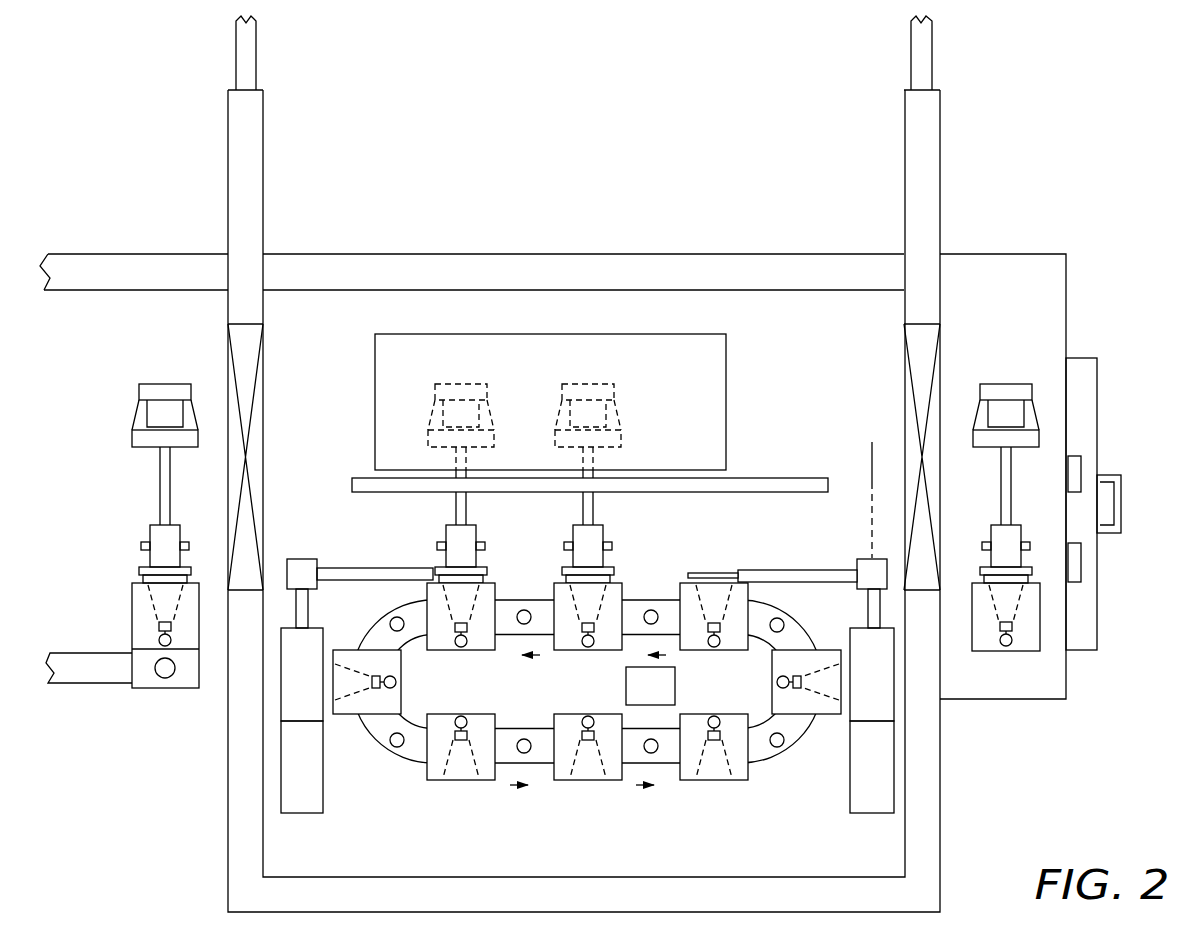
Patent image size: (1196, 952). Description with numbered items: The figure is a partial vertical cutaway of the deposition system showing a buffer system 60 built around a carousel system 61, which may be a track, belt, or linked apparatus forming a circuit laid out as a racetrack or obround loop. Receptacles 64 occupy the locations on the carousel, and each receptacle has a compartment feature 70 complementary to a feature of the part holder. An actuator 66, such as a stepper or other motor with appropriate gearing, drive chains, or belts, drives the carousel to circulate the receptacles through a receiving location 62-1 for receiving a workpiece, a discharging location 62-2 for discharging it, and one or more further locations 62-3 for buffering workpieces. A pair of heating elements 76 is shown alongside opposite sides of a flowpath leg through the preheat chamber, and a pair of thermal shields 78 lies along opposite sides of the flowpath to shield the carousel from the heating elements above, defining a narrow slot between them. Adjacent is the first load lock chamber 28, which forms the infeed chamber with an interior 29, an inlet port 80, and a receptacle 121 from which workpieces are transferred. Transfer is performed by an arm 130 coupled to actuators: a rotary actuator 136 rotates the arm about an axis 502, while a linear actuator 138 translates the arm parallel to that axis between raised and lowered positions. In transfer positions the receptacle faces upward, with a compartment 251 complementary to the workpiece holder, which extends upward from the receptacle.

The first load lock chamber 28 is at (1028, 239).
The interior 29 is at (1042, 309).
The heating elements 76 is at (690, 360).
The thermal shields 78 is at (773, 483).
The axis 502 is at (870, 458).
The inlet port 80 is at (1087, 402).
The receptacles 64 is at (692, 598).
The arm 130 is at (801, 561).
The receptacle 121 is at (1027, 627).
The compartment 251 is at (160, 603).
The linear actuator 138 is at (298, 700).
The rotary actuator 136 is at (300, 775).
The receiving location 62-1 is at (692, 688).
The discharging location 62-2 is at (464, 665).
The further locations 62-3 is at (591, 665).
The compartment feature 70 is at (727, 768).
The carousel system 61 is at (768, 771).
The buffer system 60 is at (591, 688).
The actuator 66 is at (665, 699).